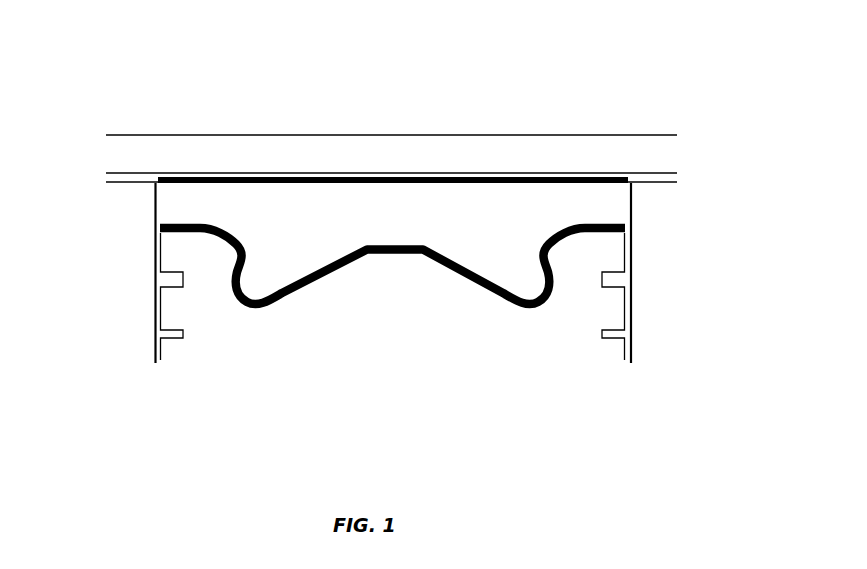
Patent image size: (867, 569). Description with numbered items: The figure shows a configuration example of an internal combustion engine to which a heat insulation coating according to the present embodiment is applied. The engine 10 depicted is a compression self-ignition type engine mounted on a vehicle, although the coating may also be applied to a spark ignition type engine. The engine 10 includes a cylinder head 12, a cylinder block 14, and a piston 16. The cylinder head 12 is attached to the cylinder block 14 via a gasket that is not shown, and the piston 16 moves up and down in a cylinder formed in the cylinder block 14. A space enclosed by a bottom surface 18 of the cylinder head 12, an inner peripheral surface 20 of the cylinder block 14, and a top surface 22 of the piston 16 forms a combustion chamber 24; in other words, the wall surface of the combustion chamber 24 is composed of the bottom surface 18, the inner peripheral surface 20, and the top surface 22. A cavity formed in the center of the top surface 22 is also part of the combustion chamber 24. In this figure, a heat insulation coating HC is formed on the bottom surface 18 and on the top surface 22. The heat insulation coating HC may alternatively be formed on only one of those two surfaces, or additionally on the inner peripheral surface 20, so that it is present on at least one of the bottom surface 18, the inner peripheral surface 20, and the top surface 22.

The engine 10 is at (533, 96).
The cylinder head 12 is at (652, 138).
The cylinder block 14 is at (649, 273).
The piston 16 is at (393, 296).
The bottom surface 18 is at (155, 182).
The inner peripheral surface 20 is at (158, 215).
The top surface 22 is at (468, 272).
The combustion chamber 24 is at (393, 197).
The heat insulation coating HC is at (488, 187).